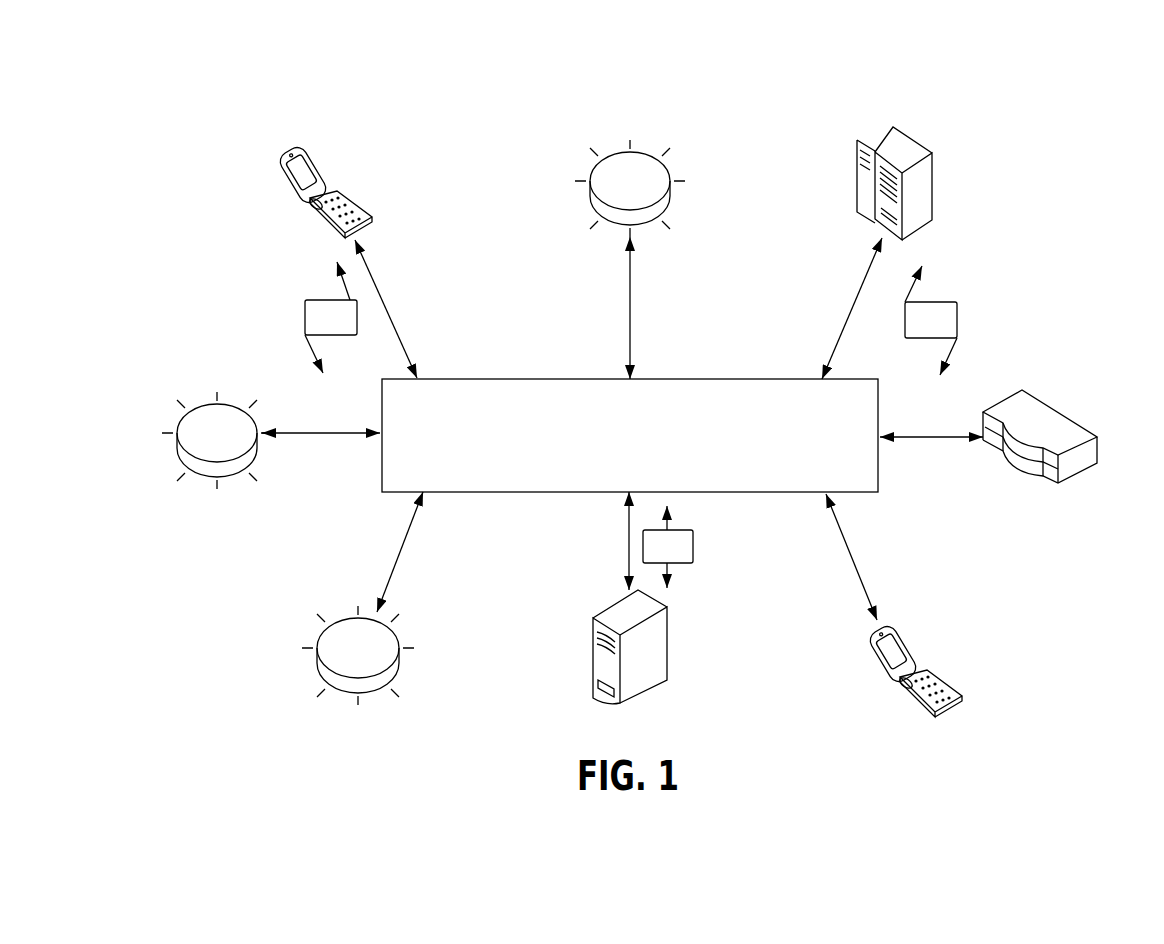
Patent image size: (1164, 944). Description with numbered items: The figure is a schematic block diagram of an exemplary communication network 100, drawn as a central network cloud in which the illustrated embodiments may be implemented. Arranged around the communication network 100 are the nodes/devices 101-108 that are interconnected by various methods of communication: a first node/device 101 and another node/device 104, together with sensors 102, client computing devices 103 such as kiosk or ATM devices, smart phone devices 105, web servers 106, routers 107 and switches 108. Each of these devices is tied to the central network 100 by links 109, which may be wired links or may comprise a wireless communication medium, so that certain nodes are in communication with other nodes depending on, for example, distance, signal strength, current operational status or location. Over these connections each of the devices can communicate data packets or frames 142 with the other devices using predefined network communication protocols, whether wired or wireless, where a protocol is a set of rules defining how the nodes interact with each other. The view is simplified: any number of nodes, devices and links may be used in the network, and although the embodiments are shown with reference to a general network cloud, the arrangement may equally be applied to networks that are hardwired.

The communication network 100 is at (612, 475).
The node/device 101 is at (355, 203).
The sensors 102 is at (670, 170).
The client computing devices 103 is at (935, 188).
The node/device 104 is at (1060, 412).
The smart phone devices 105 is at (945, 688).
The web servers 106 is at (657, 683).
The routers 107 is at (333, 690).
The switches 108 is at (235, 478).
The links 109 is at (404, 340).
The data packets 142 is at (631, 425).